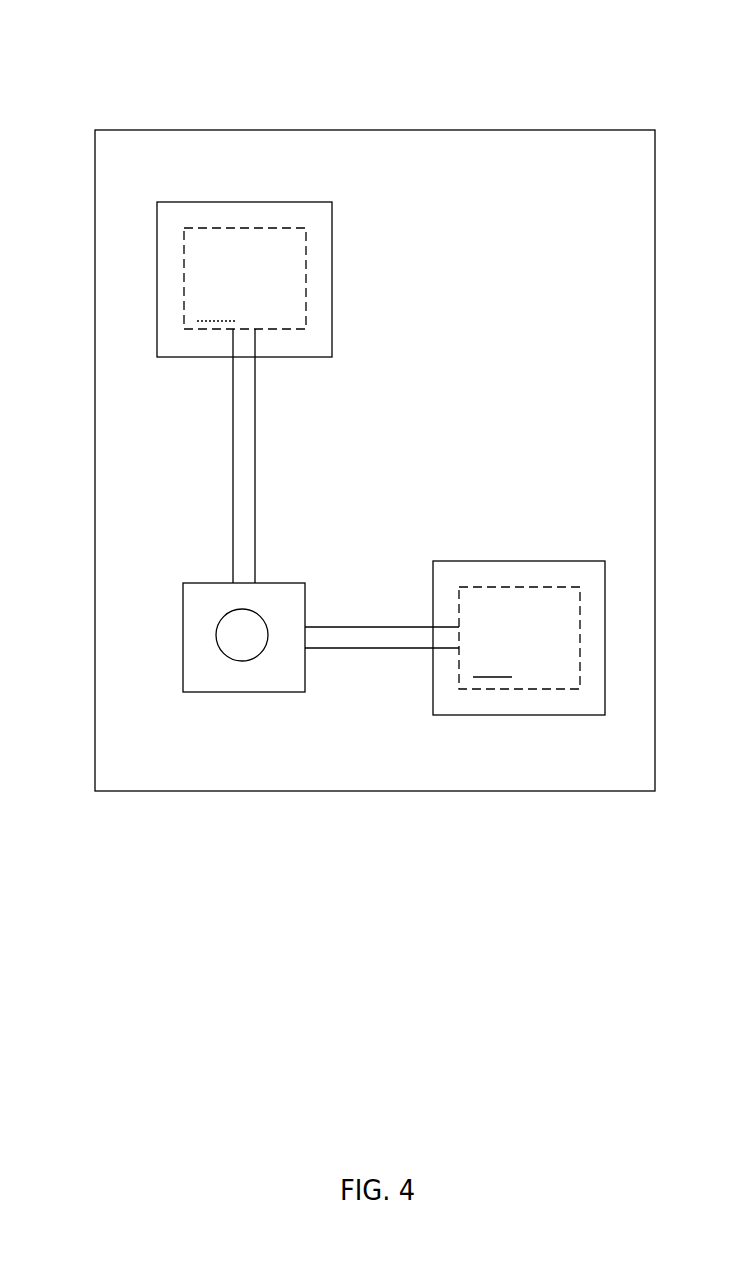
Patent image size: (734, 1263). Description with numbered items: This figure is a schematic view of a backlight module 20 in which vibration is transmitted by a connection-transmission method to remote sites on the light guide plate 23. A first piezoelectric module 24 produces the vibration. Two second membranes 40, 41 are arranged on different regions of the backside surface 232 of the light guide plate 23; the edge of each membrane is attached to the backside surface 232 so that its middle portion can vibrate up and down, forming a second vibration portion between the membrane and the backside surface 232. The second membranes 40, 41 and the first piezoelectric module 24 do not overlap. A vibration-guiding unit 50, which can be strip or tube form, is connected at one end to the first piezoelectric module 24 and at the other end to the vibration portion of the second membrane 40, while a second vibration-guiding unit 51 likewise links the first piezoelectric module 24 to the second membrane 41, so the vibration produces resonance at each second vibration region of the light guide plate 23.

The backlight module 20 is at (78, 49).
The light guide plate 23 is at (523, 130).
The backside surface 232 is at (618, 179).
The second membrane 40 is at (157, 277).
The second membrane 41 is at (518, 715).
The vibration-guiding unit 50 is at (242, 447).
The vibration-guiding unit 51 is at (388, 638).
The first piezoelectric module 24 is at (206, 673).